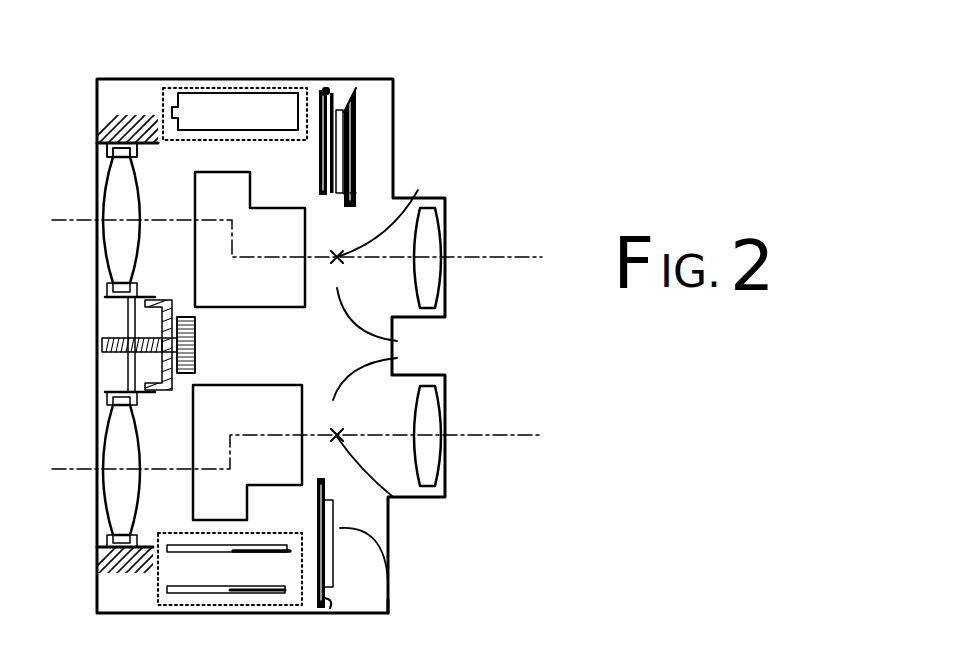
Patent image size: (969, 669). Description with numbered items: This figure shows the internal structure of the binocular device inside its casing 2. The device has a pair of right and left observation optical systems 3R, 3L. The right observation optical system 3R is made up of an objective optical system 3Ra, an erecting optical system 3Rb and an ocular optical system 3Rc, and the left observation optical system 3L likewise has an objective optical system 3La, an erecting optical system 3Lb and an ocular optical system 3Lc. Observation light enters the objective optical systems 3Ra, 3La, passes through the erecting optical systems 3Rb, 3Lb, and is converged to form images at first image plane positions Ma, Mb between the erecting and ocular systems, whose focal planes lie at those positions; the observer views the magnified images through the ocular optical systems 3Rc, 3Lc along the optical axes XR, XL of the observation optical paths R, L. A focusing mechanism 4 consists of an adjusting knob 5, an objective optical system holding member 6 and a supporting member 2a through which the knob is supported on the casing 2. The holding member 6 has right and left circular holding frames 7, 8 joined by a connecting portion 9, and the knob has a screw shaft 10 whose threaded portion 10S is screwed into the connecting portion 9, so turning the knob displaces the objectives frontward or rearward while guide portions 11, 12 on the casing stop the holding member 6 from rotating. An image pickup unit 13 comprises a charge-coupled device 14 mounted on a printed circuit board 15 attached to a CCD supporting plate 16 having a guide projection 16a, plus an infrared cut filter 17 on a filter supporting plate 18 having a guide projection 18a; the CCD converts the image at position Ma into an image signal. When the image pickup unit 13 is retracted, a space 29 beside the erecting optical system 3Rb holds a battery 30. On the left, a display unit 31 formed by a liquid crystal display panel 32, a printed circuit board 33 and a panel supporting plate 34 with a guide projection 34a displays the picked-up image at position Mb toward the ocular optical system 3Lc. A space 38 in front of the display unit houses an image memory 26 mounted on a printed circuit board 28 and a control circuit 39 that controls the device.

The casing 2 is at (136, 79).
The supporting member 2a is at (167, 300).
The observation optical system 3R is at (278, 160).
The observation optical system 3L is at (269, 527).
The objective optical system 3Ra is at (113, 188).
The erecting optical system 3Rb is at (208, 256).
The ocular optical system 3Rc is at (432, 268).
The objective optical system 3La is at (120, 487).
The erecting optical system 3Lb is at (198, 446).
The ocular optical system 3Lc is at (432, 420).
The focusing mechanism 4 is at (143, 352).
The adjusting knob 5 is at (195, 343).
The objective optical system holding member 6 is at (107, 394).
The objective optical system holding frame 7 is at (138, 150).
The objective optical system holding frame 8 is at (105, 540).
The connecting portion 9 is at (107, 294).
The screw shaft 10 is at (123, 353).
The threaded portion 10S is at (115, 338).
The guide portion 11 is at (98, 143).
The guide portion 12 is at (97, 548).
The image pickup unit 13 is at (357, 131).
The charge-coupled device 14 is at (340, 192).
The printed circuit board 15 is at (346, 197).
The CCD supporting plate 16 is at (352, 194).
The guide projection 16a is at (355, 147).
The infrared cut filter 17 is at (318, 157).
The filter supporting plate 18 is at (328, 95).
The guide projection 18a is at (355, 117).
The image memory 26 is at (197, 547).
The printed circuit board 28 is at (238, 553).
The space 29 is at (183, 88).
The battery 30 is at (233, 110).
The display unit 31 is at (389, 613).
The liquid crystal display panel 32 is at (342, 580).
The printed circuit board 33 is at (327, 603).
The panel supporting plate 34 is at (317, 580).
The guide projection 34a is at (318, 542).
The space 38 is at (158, 597).
The control circuit 39 is at (203, 590).
The first image plane position Ma is at (388, 215).
The first image plane position Mb is at (393, 497).
The observation optical path R is at (397, 341).
The observation optical path L is at (397, 358).
The optical axis XR is at (512, 257).
The optical axis XL is at (514, 436).